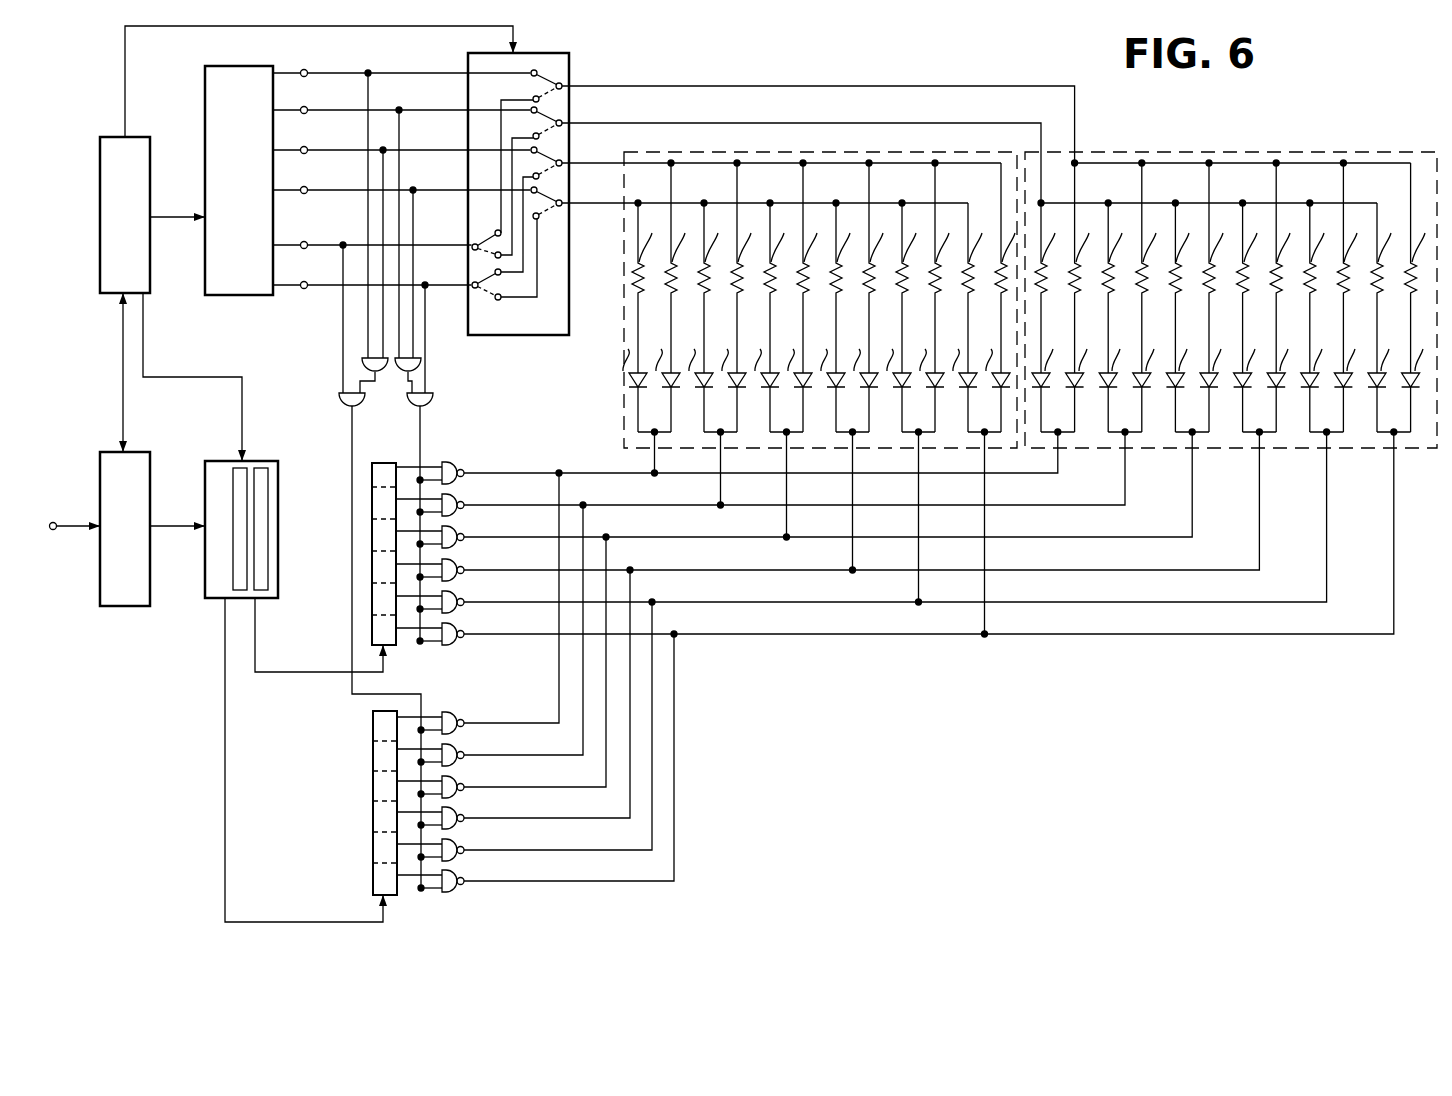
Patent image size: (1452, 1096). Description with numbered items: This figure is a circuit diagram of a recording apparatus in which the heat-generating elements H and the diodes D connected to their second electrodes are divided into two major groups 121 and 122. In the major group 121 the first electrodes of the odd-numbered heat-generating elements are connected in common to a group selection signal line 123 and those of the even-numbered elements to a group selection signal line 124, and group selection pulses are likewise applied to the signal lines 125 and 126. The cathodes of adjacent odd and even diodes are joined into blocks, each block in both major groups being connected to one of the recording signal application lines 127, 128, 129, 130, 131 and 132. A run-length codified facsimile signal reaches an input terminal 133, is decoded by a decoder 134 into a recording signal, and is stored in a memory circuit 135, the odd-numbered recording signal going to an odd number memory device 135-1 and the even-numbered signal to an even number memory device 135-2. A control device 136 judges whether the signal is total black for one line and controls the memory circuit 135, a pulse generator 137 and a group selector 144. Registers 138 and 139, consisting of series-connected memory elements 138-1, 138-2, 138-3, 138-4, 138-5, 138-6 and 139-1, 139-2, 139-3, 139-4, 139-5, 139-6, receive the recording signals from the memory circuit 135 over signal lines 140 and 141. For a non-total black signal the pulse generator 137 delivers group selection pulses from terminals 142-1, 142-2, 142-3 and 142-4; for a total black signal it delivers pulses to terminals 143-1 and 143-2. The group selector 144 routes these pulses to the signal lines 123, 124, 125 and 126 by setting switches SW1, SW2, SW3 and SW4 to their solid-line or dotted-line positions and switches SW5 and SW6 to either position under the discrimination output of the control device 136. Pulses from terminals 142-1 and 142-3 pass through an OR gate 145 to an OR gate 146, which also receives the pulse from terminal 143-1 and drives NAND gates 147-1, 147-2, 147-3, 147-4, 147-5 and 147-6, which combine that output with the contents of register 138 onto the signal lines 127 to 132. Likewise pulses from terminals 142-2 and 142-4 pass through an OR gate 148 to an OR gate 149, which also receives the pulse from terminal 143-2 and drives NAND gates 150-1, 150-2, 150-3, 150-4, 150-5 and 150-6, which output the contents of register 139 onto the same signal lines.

The major group 121 is at (884, 151).
The major group 122 is at (1340, 152).
The signal line 123 is at (594, 205).
The signal line 124 is at (702, 162).
The signal line 125 is at (665, 122).
The signal line 126 is at (642, 84).
The signal line 127 is at (589, 472).
The signal line 128 is at (645, 504).
The signal line 129 is at (677, 537).
The signal line 130 is at (649, 569).
The signal line 131 is at (678, 601).
The signal line 132 is at (708, 635).
The input terminal 133 is at (53, 530).
The decoder 134 is at (120, 608).
The memory circuit 135 is at (246, 530).
The odd number memory device 135-1 is at (233, 467).
The even number memory device 135-2 is at (260, 468).
The control device 136 is at (103, 296).
The pulse generator 137 is at (221, 298).
The register 138 is at (362, 578).
The memory element 138-1 is at (372, 476).
The memory element 138-2 is at (372, 508).
The memory element 138-3 is at (372, 540).
The memory element 138-4 is at (372, 573).
The memory element 138-5 is at (372, 605).
The memory element 138-6 is at (362, 636).
The register 139 is at (364, 828).
The memory element 139-1 is at (373, 726).
The memory element 139-2 is at (373, 758).
The memory element 139-3 is at (373, 790).
The memory element 139-4 is at (373, 821).
The memory element 139-5 is at (373, 853).
The memory element 139-6 is at (373, 884).
The signal line 140 is at (269, 672).
The signal line 141 is at (245, 922).
The terminal 142-1 is at (305, 187).
The terminal 142-2 is at (305, 147).
The terminal 142-3 is at (303, 107).
The terminal 142-4 is at (307, 71).
The terminal 143-1 is at (304, 289).
The terminal 143-2 is at (305, 241).
The group selector 144 is at (526, 208).
The OR gate 145 is at (422, 363).
The OR gate 146 is at (435, 403).
The NAND gate 147-1 is at (455, 465).
The NAND gate 147-2 is at (455, 497).
The NAND gate 147-3 is at (455, 529).
The NAND gate 147-4 is at (455, 562).
The NAND gate 147-5 is at (455, 594).
The NAND gate 147-6 is at (455, 626).
The OR gate 148 is at (384, 390).
The OR gate 149 is at (343, 405).
The NAND gate 150-1 is at (455, 715).
The NAND gate 150-2 is at (455, 747).
The NAND gate 150-3 is at (455, 779).
The NAND gate 150-4 is at (455, 810).
The NAND gate 150-5 is at (455, 842).
The NAND gate 150-6 is at (455, 873).
The switch SW1 is at (535, 71).
The switch SW2 is at (553, 116).
The switch SW3 is at (553, 156).
The switch SW4 is at (553, 196).
The switch SW5 is at (479, 232).
The switch SW6 is at (479, 272).